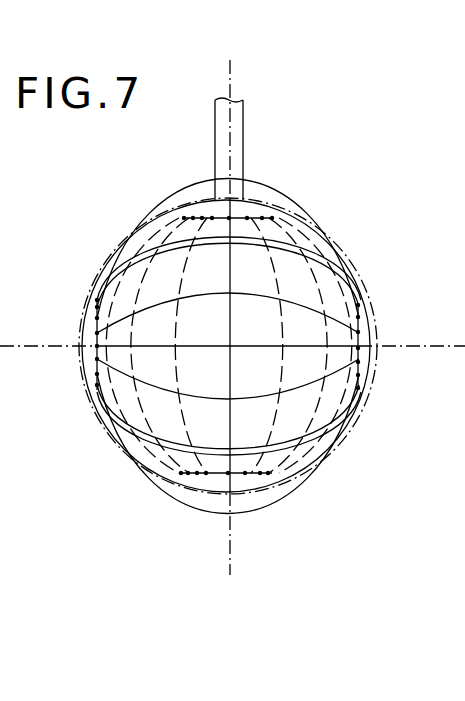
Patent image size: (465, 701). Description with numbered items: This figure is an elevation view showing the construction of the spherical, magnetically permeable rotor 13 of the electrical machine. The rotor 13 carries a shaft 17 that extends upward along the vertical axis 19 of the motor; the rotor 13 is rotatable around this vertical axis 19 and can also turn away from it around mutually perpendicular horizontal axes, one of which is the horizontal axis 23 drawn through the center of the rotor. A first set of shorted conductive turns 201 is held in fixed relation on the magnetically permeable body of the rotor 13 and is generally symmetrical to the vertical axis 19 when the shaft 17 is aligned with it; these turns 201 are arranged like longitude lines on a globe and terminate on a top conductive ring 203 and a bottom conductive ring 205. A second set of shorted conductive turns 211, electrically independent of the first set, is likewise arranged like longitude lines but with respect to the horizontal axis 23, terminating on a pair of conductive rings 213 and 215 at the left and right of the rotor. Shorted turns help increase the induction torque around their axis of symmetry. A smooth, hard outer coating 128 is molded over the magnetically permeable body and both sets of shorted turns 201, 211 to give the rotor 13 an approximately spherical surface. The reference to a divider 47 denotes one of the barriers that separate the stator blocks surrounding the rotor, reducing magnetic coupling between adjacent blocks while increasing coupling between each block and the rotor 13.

The rotor 13 is at (402, 229).
The shaft 17 is at (244, 154).
The vertical axis 19 is at (234, 81).
The horizontal axis 23 is at (419, 347).
The divider 47 is at (48, 434).
The outer coating 128 is at (353, 435).
The first set of shorted conductive turns 201 is at (300, 303).
The conductive ring 203 is at (257, 217).
The conductive ring 205 is at (262, 479).
The second set of shorted conductive turns 211 is at (277, 286).
The conductive ring 213 is at (93, 311).
The conductive ring 215 is at (362, 366).